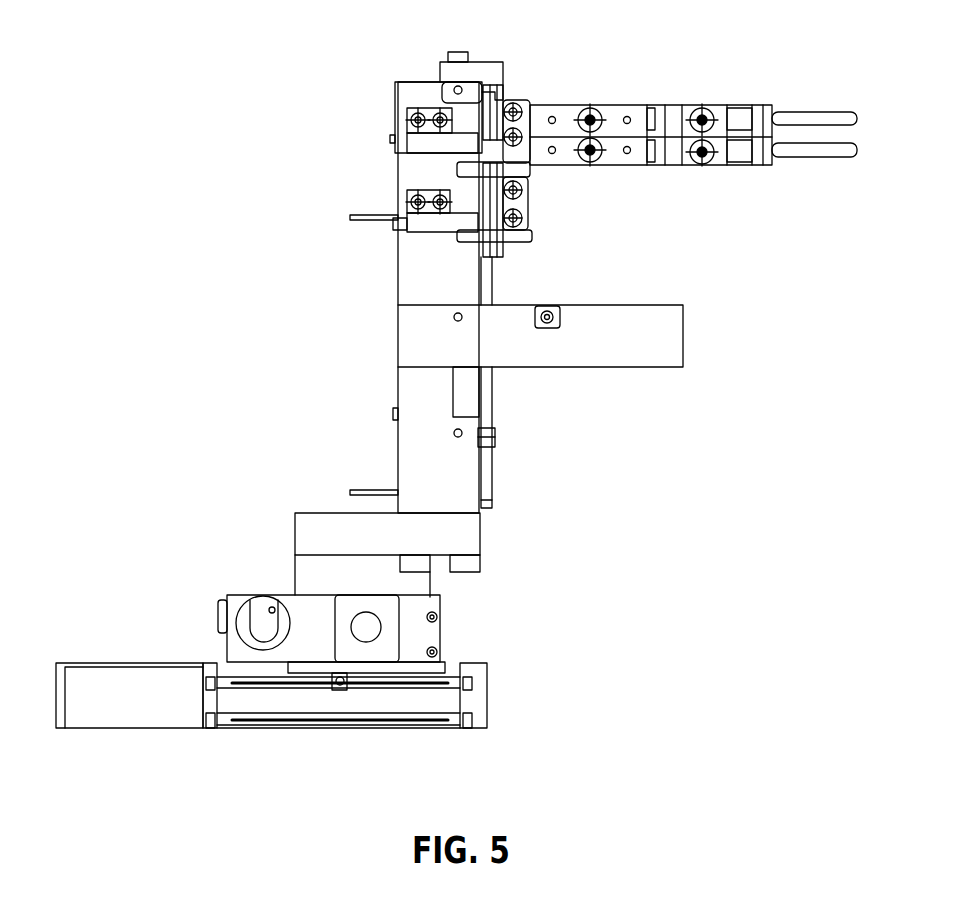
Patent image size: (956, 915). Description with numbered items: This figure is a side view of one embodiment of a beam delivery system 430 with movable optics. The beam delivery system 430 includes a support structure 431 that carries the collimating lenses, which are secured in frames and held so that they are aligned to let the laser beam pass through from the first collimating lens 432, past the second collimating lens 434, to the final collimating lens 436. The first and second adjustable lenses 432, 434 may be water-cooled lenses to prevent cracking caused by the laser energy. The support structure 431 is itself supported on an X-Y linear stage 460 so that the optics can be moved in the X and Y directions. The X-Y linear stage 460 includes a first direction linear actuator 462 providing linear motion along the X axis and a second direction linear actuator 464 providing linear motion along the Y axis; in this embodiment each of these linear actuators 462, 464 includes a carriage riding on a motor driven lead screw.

The beam delivery system 430 is at (277, 78).
The support structure 431 is at (398, 265).
The first collimating lens 432 is at (597, 83).
The second collimating lens 434 is at (588, 182).
The final collimating lens 436 is at (708, 328).
The X-Y linear stage 460 is at (522, 592).
The first direction linear actuator 462 is at (190, 613).
The second direction linear actuator 464 is at (80, 648).